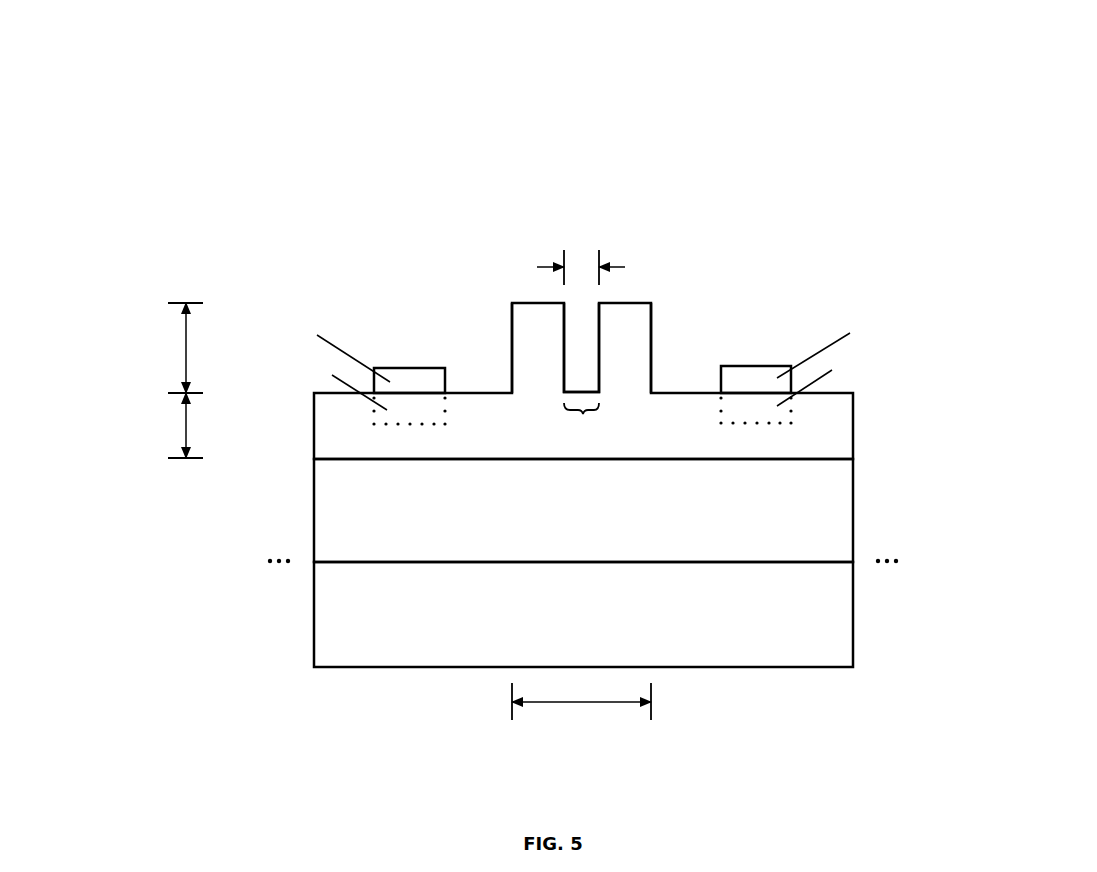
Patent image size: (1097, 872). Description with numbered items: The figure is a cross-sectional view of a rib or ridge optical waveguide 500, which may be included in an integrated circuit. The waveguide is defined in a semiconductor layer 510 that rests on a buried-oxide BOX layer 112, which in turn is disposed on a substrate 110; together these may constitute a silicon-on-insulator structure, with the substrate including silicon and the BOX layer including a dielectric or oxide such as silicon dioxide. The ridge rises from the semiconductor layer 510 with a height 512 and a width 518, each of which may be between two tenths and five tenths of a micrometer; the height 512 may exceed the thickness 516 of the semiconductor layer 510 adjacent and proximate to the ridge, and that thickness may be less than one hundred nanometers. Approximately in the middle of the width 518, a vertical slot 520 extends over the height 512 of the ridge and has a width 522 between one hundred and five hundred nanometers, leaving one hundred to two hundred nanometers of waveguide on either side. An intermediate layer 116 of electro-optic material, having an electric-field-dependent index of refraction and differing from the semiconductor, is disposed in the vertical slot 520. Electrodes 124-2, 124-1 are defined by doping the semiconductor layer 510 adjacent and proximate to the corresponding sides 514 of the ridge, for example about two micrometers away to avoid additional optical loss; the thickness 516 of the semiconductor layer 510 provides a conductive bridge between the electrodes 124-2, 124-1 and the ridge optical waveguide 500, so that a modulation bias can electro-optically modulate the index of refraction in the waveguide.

The ridge optical waveguide 500 is at (758, 82).
The semiconductor layer 510 is at (495, 440).
The BOX layer 112 is at (583, 510).
The substrate 110 is at (583, 614).
The sides 514 is at (651, 353).
The intermediate layer 116 is at (582, 328).
The vertical slot 520 is at (580, 409).
The width of vertical slot 522 is at (582, 258).
The width of ridge optical waveguide 518 is at (573, 702).
The height of ridge optical waveguide 512 is at (183, 343).
The thickness of semiconductor layer 516 is at (183, 422).
The electrode 124-2 is at (374, 352).
The electrode 124-1 is at (721, 351).